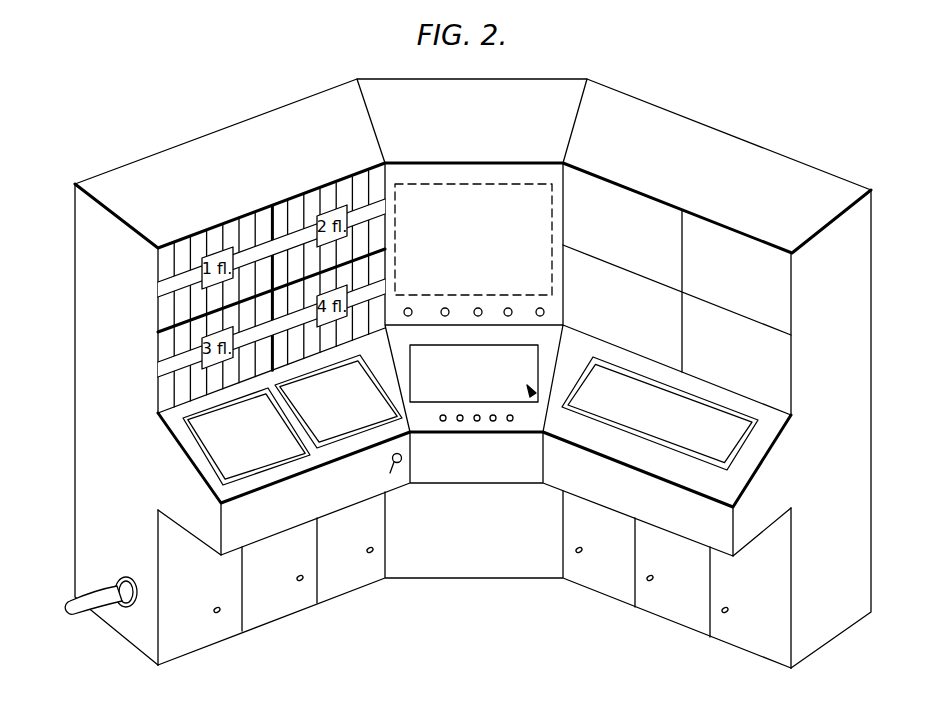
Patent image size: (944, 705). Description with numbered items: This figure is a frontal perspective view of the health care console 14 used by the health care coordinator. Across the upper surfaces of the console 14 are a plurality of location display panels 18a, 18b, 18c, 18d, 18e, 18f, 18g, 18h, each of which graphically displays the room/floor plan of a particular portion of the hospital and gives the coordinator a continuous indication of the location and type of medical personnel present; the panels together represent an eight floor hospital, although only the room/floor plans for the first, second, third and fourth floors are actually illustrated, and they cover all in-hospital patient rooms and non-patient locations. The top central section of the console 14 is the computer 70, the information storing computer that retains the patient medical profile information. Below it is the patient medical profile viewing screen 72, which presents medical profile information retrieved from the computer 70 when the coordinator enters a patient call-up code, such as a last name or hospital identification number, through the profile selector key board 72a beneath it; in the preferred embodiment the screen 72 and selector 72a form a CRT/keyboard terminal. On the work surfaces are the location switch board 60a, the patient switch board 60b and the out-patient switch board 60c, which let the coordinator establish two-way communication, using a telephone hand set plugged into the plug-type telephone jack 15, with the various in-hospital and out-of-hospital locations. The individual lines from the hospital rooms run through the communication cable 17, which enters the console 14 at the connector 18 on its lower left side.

The health care console 14 is at (58, 214).
The plug-type telephone jack 15 is at (383, 473).
The communication cable 17 is at (100, 577).
The connector 18 is at (128, 603).
The location display panel 18a is at (167, 269).
The location display panel 18b is at (158, 372).
The location display panel 18c is at (357, 160).
The location display panel 18d is at (380, 285).
The location display panel 18e is at (578, 178).
The location display panel 18f is at (638, 285).
The location display panel 18g is at (767, 250).
The location display panel 18h is at (783, 358).
The location switch board 60a is at (228, 482).
The patient switch board 60b is at (317, 447).
The out-patient switch board 60c is at (570, 415).
The computer 70 is at (559, 97).
The patient medical profile viewing screen 72 is at (499, 183).
The profile selector key board 72a is at (533, 397).